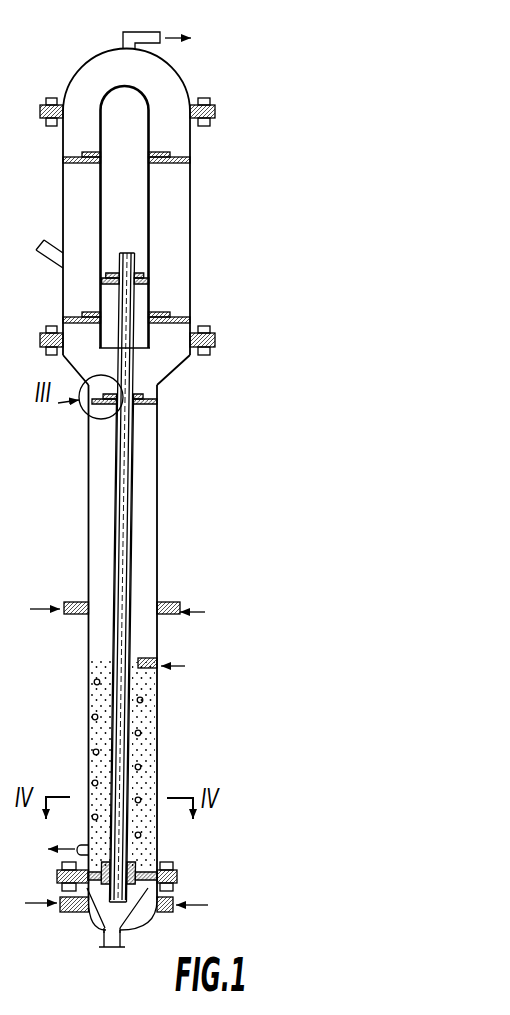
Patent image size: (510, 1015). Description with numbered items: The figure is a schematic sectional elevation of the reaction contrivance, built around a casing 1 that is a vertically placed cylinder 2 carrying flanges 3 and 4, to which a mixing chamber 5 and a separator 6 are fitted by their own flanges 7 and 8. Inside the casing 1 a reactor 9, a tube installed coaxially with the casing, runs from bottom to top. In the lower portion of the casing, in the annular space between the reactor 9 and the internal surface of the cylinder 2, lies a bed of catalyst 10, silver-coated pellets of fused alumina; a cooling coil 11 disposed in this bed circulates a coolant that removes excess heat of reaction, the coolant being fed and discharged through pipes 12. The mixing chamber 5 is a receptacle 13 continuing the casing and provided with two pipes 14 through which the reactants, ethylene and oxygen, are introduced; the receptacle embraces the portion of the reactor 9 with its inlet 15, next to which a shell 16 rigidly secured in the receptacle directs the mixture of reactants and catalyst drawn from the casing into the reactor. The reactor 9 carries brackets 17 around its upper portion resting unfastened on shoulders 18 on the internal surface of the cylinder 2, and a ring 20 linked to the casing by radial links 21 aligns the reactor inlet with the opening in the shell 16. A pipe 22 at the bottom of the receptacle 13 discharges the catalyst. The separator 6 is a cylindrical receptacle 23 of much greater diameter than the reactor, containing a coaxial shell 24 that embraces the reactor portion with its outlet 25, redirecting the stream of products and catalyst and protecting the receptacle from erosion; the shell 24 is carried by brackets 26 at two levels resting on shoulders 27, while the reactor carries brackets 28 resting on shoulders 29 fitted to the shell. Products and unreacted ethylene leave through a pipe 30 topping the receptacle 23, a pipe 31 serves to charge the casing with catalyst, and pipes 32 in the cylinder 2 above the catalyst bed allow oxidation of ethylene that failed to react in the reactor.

The casing 1 is at (161, 488).
The cylinder 2 is at (159, 440).
The flange 3 is at (176, 870).
The flange 4 is at (210, 350).
The mixing chamber 5 is at (133, 937).
The separator 6 is at (193, 81).
The flange 7 is at (175, 887).
The flange 8 is at (212, 332).
The reactor 9 is at (130, 556).
The catalyst 10 is at (148, 763).
The cooling coil 11 is at (141, 835).
The pipes 12 is at (154, 660).
The receptacle 13 is at (151, 917).
The pipes 14 is at (62, 900).
The inlet 15 is at (104, 905).
The shell 16 is at (104, 926).
The brackets 17 is at (137, 393).
The shoulders 18 is at (105, 406).
The ring 20 is at (80, 835).
The radial links 21 is at (152, 868).
The pipe 22 is at (110, 938).
The receptacle 23 is at (192, 250).
The shell 24 is at (100, 200).
The outlet 25 is at (122, 252).
The brackets 26 is at (159, 151).
The shoulders 27 is at (173, 164).
The brackets 28 is at (141, 276).
The shoulders 29 is at (145, 284).
The pipe 30 is at (144, 36).
The pipe 31 is at (35, 252).
The pipes 32 is at (72, 603).